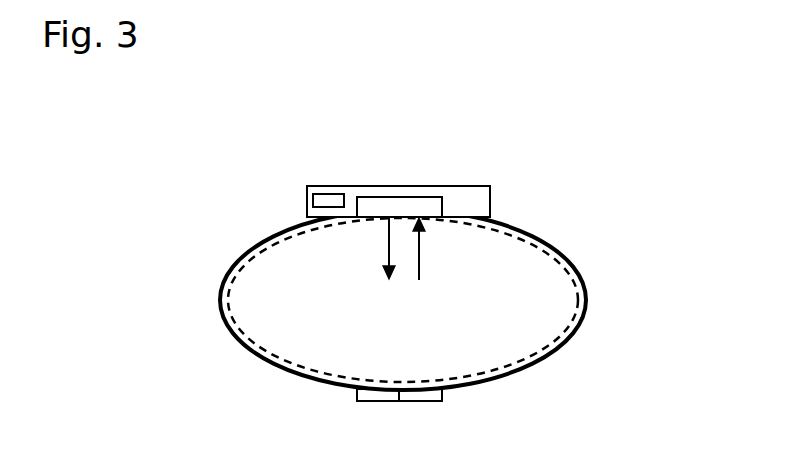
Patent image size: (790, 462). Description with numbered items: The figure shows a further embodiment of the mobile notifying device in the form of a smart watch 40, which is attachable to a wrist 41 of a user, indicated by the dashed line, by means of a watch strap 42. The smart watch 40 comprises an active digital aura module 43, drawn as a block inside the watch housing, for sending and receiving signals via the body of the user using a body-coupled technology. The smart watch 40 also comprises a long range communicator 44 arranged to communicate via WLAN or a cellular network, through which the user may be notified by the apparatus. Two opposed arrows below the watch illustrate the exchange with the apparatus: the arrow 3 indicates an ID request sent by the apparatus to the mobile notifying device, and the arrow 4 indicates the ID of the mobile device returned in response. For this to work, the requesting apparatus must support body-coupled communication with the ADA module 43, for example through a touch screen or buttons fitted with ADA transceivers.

The arrow indicating ID request 3 is at (420, 247).
The arrow indicating returned ID 4 is at (388, 245).
The smart watch 40 is at (467, 186).
The wrist 41 is at (577, 273).
The watch strap 42 is at (583, 318).
The active digital aura (ADA) module 43 is at (390, 192).
The long range communicator 44 is at (328, 194).